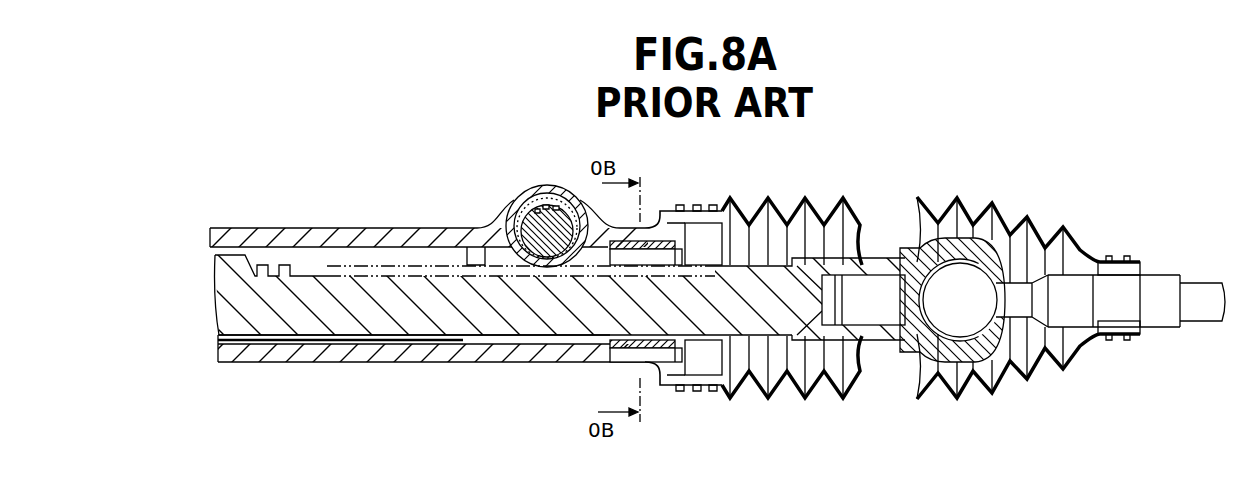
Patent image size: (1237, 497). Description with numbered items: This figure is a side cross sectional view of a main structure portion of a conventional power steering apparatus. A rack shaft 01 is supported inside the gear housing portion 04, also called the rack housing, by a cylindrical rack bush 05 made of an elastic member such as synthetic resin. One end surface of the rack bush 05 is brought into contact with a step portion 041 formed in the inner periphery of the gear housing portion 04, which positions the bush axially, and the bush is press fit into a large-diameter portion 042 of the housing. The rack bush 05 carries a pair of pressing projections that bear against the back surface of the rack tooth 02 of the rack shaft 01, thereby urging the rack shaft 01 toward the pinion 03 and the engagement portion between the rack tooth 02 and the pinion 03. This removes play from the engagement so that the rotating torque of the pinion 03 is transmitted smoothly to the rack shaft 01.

The rack shaft 01 is at (492, 318).
The rack tooth 02 is at (485, 250).
The pinion 03 is at (540, 215).
The gear housing portion 04 is at (413, 355).
The step portion 041 is at (618, 367).
The large-diameter portion 042 is at (653, 353).
The rack bush 05 is at (652, 242).